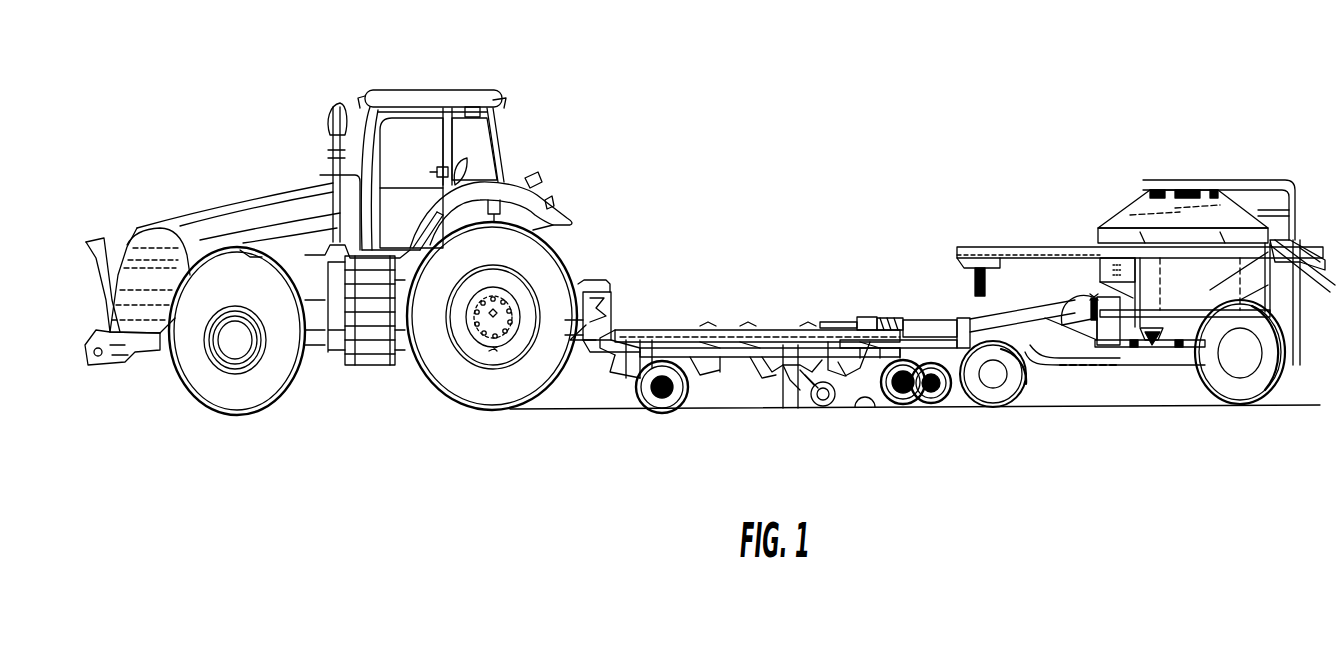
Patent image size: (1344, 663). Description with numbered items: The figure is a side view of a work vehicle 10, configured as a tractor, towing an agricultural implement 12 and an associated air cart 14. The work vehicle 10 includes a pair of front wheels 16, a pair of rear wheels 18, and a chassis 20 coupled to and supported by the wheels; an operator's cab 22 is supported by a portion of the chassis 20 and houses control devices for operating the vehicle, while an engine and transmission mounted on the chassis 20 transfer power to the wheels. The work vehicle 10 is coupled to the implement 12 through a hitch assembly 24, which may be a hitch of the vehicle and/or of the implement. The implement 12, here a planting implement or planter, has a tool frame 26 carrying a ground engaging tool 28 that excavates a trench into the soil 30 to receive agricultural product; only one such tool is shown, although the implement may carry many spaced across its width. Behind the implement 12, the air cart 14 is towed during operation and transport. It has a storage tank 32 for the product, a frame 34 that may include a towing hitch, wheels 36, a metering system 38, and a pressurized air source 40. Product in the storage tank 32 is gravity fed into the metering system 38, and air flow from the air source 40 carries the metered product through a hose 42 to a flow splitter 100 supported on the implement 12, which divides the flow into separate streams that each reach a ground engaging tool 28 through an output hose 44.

The work vehicle 10 is at (187, 116).
The agricultural implement 12 is at (752, 258).
The air cart 14 is at (1135, 157).
The front wheels 16 is at (242, 405).
The rear wheels 18 is at (460, 392).
The chassis 20 is at (335, 352).
The operator's cab 22 is at (465, 96).
The hitch assembly 24 is at (640, 312).
The tool frame 26 is at (793, 335).
The ground engaging tool 28 is at (795, 410).
The soil 30 is at (870, 405).
The storage tank 32 is at (1138, 210).
The frame 34 is at (1032, 320).
The wheels 36 is at (1030, 370).
The metering system 38 is at (1167, 347).
The pressurized air source 40 is at (1053, 318).
The hose 42 is at (1090, 366).
The output hose 44 is at (836, 320).
The flow splitter 100 is at (873, 320).